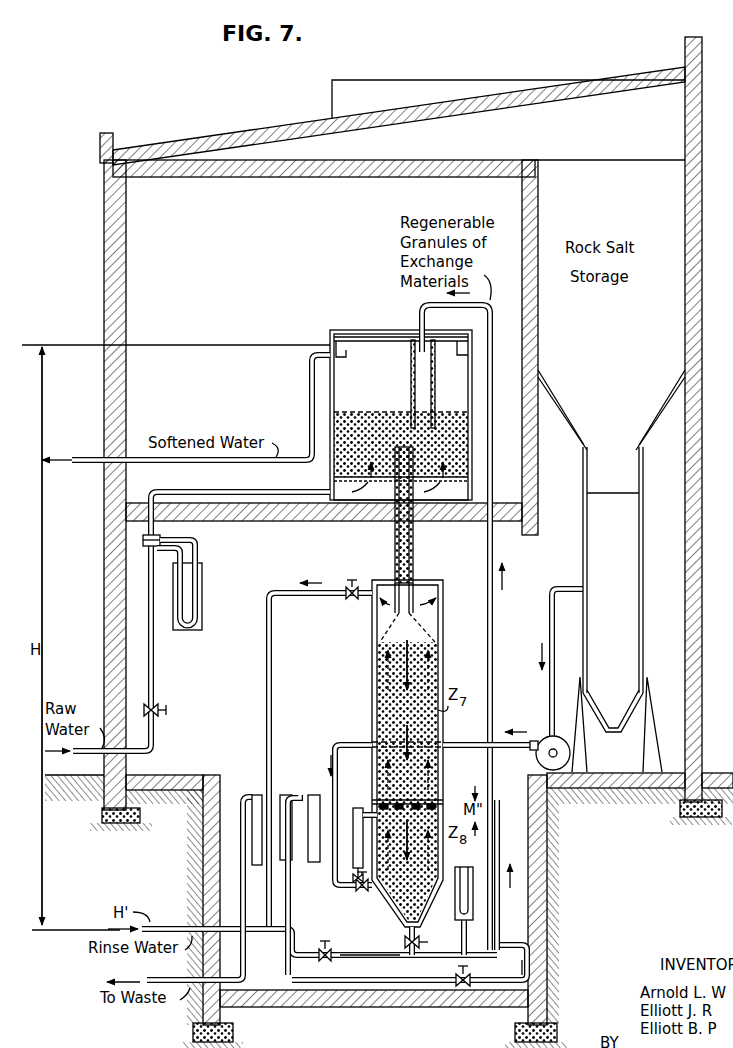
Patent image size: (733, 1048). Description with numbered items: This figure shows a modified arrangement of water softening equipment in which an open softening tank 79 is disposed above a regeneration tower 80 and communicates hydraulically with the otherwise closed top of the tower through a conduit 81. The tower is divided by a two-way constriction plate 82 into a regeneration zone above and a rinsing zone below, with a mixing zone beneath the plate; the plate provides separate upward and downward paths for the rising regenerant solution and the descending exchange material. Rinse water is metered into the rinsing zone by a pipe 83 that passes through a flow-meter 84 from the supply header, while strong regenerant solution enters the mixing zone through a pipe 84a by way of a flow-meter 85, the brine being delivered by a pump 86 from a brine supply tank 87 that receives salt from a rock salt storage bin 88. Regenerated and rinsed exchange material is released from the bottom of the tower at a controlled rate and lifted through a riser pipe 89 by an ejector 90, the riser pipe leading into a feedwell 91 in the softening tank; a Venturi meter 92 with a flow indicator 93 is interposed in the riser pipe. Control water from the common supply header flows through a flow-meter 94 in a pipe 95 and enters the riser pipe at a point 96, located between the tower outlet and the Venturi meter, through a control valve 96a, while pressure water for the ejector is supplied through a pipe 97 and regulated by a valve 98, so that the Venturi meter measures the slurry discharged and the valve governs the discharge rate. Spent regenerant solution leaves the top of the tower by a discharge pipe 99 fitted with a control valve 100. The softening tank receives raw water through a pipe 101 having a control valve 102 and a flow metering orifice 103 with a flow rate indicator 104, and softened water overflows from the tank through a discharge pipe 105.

The open softening tank 79 is at (370, 328).
The regeneration tower 80 is at (445, 604).
The conduit 81 is at (414, 565).
The two-way constriction plate 82 is at (424, 800).
The pipe 83 is at (360, 892).
The flow-meter 84 is at (284, 795).
The pipe 84a is at (360, 742).
The flow-meter 85 is at (356, 810).
The pump 86 is at (550, 739).
The brine supply tank 87 is at (582, 561).
The rock salt storage bin 88 is at (611, 571).
The riser pipe 89 is at (500, 830).
The ejector 90 is at (505, 947).
The feedwell 91 is at (412, 385).
The Venturi meter 92 is at (420, 942).
The flow indicator 93 is at (477, 862).
The flow-meter 94 is at (278, 862).
The pipe 95 is at (272, 792).
The point 96 is at (403, 957).
The control valve 96a is at (332, 948).
The pipe 97 is at (530, 978).
The valve 98 is at (462, 966).
The discharge pipe 99 is at (273, 700).
The control valve 100 is at (352, 600).
The pipe 101 is at (158, 668).
The control valve 102 is at (165, 712).
The flow metering orifice 103 is at (142, 541).
The flow rate indicator 104 is at (202, 584).
The discharge pipe 105 is at (311, 410).